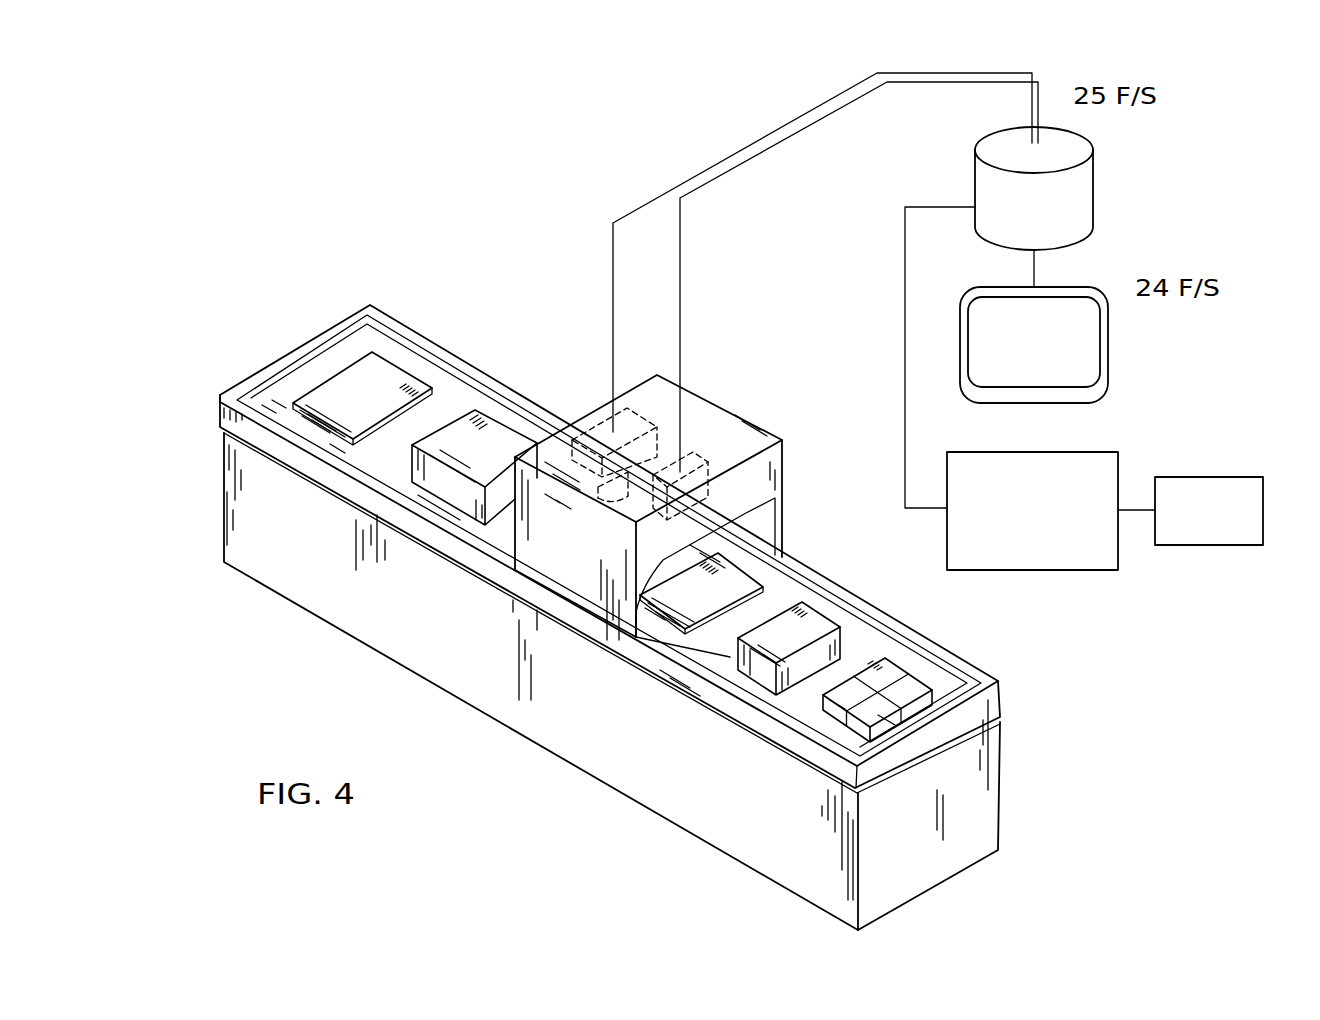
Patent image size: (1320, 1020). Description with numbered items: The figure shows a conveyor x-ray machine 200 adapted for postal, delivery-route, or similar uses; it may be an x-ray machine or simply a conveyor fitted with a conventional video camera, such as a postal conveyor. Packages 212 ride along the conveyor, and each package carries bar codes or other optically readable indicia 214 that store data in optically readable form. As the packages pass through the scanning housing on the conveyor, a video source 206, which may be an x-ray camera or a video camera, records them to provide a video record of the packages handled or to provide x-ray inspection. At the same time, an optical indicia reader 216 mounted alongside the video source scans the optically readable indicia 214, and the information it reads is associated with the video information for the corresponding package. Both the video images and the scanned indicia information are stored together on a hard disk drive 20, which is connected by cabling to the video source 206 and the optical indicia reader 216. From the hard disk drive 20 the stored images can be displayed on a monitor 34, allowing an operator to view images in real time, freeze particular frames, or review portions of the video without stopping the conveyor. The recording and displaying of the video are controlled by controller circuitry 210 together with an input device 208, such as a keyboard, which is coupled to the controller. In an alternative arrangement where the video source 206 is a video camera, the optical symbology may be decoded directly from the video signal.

The conveyor x-ray machine 200 is at (598, 783).
The packages 212 is at (372, 385).
The optically readable indicia 214 is at (410, 383).
The video source 206 is at (598, 423).
The optical indicia reader 216 is at (701, 446).
The hard disk drive 20 is at (1087, 190).
The monitor 34 is at (1087, 365).
The controller circuitry 210 is at (1027, 570).
The input device 208 is at (1218, 545).